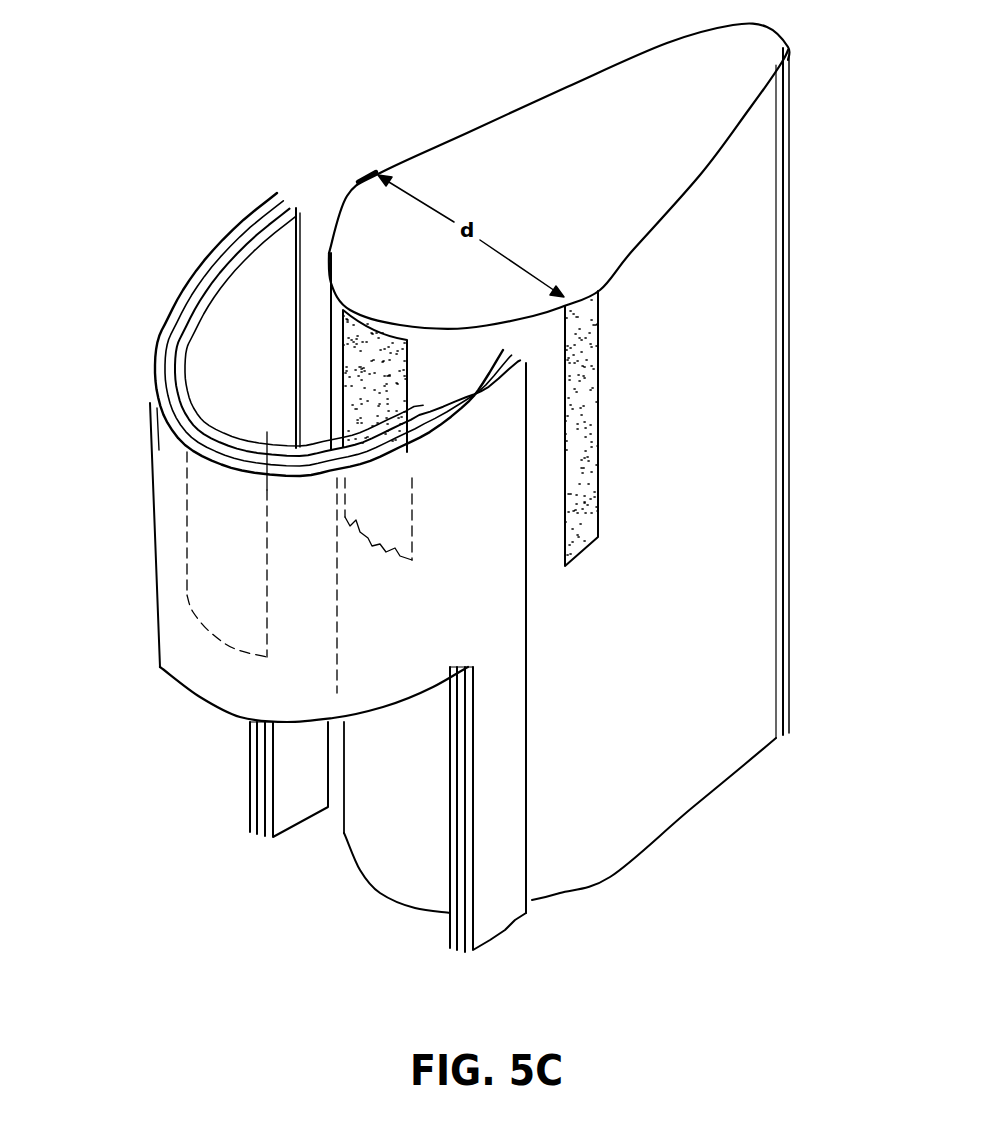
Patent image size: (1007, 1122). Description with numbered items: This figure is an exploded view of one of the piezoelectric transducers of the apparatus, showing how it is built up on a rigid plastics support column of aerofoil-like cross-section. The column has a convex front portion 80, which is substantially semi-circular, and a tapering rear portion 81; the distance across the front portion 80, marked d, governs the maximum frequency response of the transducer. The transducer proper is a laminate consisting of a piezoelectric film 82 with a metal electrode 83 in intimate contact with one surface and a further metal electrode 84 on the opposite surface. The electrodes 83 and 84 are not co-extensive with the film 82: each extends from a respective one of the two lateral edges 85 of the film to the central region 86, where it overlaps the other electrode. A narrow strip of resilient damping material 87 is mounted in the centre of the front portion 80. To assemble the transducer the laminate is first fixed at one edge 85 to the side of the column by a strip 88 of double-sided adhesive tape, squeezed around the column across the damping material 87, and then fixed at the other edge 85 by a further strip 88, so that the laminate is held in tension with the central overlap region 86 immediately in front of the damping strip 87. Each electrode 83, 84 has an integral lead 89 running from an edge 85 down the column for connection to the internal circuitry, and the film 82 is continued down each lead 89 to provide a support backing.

The convex front portion 80 is at (360, 240).
The tapering rear portion 81 is at (640, 85).
The piezoelectric film 82 is at (152, 480).
The metal electrode 83 is at (217, 310).
The metal electrode 84 is at (307, 630).
The lateral edges 85 is at (297, 278).
The central region 86 is at (215, 543).
The strip of resilient damping material 87 is at (388, 362).
The strip of double-sided adhesive tape 88 is at (373, 172).
The integral lead 89 is at (294, 795).